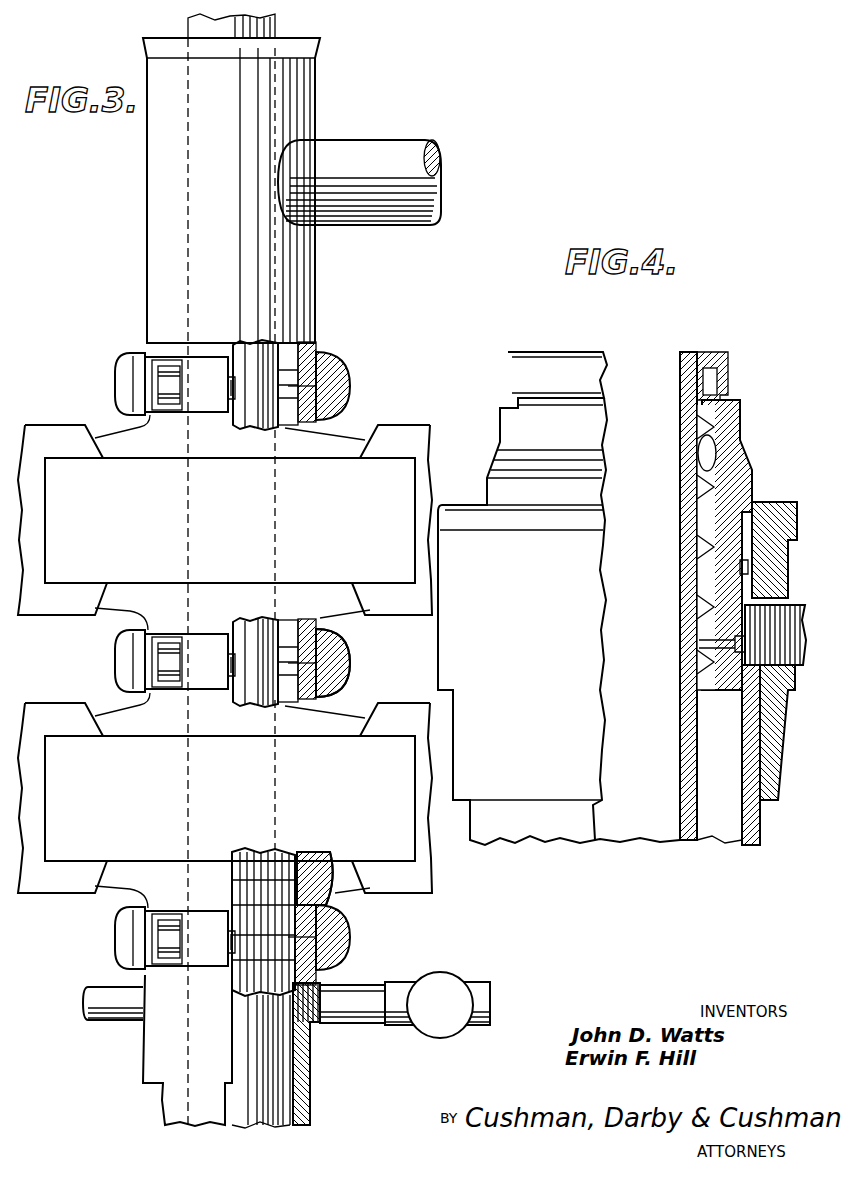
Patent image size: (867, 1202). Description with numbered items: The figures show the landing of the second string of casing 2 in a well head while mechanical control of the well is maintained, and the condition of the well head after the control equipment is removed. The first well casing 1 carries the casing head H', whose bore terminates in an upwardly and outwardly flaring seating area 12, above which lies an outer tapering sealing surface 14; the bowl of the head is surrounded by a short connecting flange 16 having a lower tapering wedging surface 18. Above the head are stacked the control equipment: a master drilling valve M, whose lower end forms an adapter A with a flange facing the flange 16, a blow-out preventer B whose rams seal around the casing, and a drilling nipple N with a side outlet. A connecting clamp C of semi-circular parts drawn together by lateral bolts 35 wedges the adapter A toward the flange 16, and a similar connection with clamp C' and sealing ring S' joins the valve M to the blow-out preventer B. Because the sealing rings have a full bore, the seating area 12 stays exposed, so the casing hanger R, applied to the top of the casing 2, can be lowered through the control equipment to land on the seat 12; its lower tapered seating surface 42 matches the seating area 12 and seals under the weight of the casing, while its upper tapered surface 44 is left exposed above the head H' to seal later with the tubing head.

In FIG. 3, the drilling nipple N is at (155, 268).
In FIG. 3, the second string of casing 2 is at (275, 292).
In FIG. 4, the second string of casing 2 is at (687, 837).
In FIG. 3, the blow-out preventer B is at (92, 575).
In FIG. 3, the sealing ring S' is at (331, 657).
In FIG. 3, the clamp C' is at (348, 663).
In FIG. 3, the upwardly and inwardly tapering sealing surface 44 is at (320, 873).
In FIG. 4, the upwardly and inwardly tapering sealing surface 44 is at (740, 453).
In FIG. 3, the master drilling valve M is at (68, 855).
In FIG. 3, the lateral bolts 35 is at (170, 933).
In FIG. 3, the adapter A is at (330, 892).
In FIG. 3, the connecting clamp C is at (110, 943).
In FIG. 3, the casing hanger R is at (240, 978).
In FIG. 4, the casing hanger R is at (743, 537).
In FIG. 3, the seating area 12 is at (320, 974).
In FIG. 4, the seating area 12 is at (690, 548).
In FIG. 3, the seating surface 42 is at (262, 965).
In FIG. 3, the casing head H' is at (172, 1050).
In FIG. 4, the casing head H' is at (750, 732).
In FIG. 3, the first well casing 1 is at (300, 1113).
In FIG. 4, the first well casing 1 is at (760, 833).
In FIG. 4, the sealing surface 14 is at (762, 505).
In FIG. 4, the connecting flange 16 is at (756, 505).
In FIG. 4, the wedging surface 18 is at (513, 548).